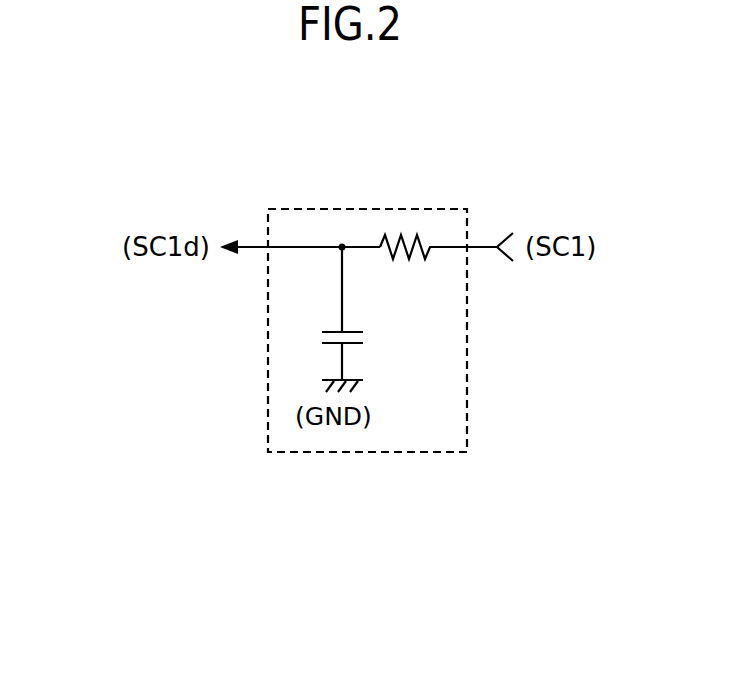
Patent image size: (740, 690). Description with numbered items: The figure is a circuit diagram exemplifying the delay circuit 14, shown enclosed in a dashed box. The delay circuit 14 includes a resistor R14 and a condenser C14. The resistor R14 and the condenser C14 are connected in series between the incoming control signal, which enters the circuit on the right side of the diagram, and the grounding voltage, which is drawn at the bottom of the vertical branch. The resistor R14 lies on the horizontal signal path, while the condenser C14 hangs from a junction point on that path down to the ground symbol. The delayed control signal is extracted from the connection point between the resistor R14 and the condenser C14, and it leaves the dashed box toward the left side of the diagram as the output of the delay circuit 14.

The delay circuit 14 is at (424, 205).
The resistor R14 is at (407, 265).
The condenser C14 is at (369, 312).